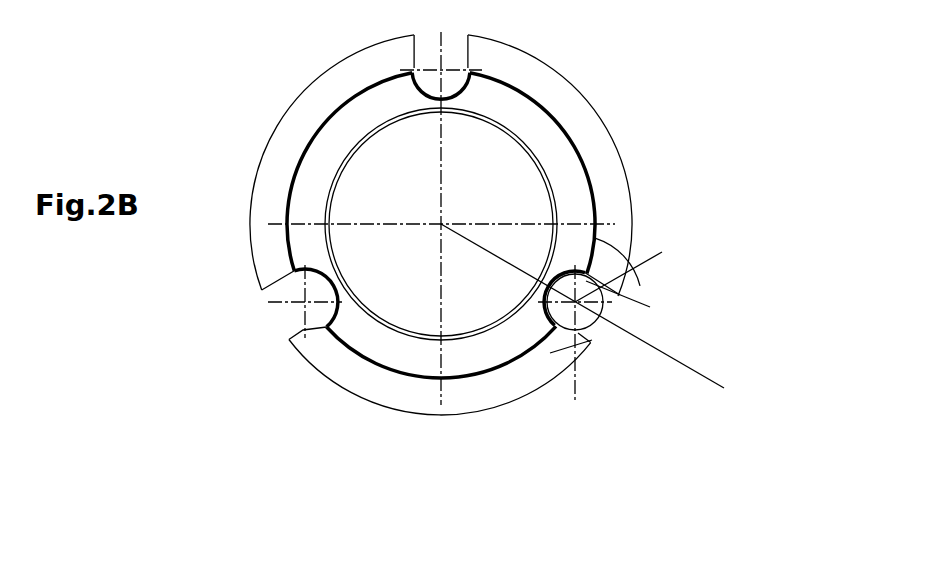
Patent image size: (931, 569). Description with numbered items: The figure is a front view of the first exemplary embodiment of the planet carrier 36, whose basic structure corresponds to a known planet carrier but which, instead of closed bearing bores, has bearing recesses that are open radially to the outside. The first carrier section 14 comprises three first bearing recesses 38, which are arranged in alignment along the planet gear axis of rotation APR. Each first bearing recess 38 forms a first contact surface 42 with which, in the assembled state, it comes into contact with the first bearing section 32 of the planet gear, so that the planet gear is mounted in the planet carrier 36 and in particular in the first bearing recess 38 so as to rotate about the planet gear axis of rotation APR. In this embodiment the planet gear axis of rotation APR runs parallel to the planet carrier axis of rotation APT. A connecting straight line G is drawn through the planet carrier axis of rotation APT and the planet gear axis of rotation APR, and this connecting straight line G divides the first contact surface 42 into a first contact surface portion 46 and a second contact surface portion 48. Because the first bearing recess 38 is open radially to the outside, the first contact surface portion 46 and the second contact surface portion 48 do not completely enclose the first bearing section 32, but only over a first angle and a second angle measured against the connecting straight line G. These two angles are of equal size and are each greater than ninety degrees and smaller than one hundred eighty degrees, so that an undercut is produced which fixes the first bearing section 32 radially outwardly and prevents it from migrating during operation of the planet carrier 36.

The planet carrier 36 is at (182, 108).
The first carrier section 14 is at (612, 170).
The first contact surface 42 is at (542, 286).
The first contact surface portion 46 is at (550, 312).
The second contact surface portion 48 is at (594, 214).
The first bearing section 32 is at (607, 293).
The first bearing recess 38 is at (612, 338).
The planet carrier axis of rotation APT is at (441, 224).
The planet gear axis of rotation APR is at (604, 302).
The connecting straight line G is at (684, 366).